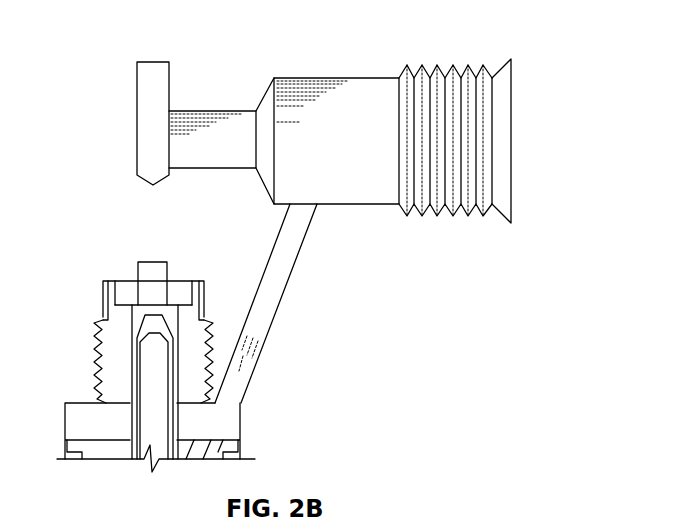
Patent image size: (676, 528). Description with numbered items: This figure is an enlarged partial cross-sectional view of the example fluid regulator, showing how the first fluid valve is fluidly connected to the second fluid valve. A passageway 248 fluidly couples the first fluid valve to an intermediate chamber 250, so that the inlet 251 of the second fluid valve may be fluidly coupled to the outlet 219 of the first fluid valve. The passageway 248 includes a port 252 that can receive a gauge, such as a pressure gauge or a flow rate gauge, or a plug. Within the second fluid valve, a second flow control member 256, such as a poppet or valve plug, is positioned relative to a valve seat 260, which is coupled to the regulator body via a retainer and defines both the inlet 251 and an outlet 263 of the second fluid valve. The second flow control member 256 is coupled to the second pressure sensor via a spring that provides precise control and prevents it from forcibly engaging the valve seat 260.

The outlet of the first fluid valve 219 is at (155, 123).
The port 252 is at (511, 140).
The passageway 248 is at (273, 285).
The intermediate chamber 250 is at (228, 423).
The valve seat 260 is at (128, 280).
The inlet of the second fluid valve 251 is at (153, 306).
The outlet of the second fluid valve 263 is at (153, 262).
The second flow control member 256 is at (160, 383).